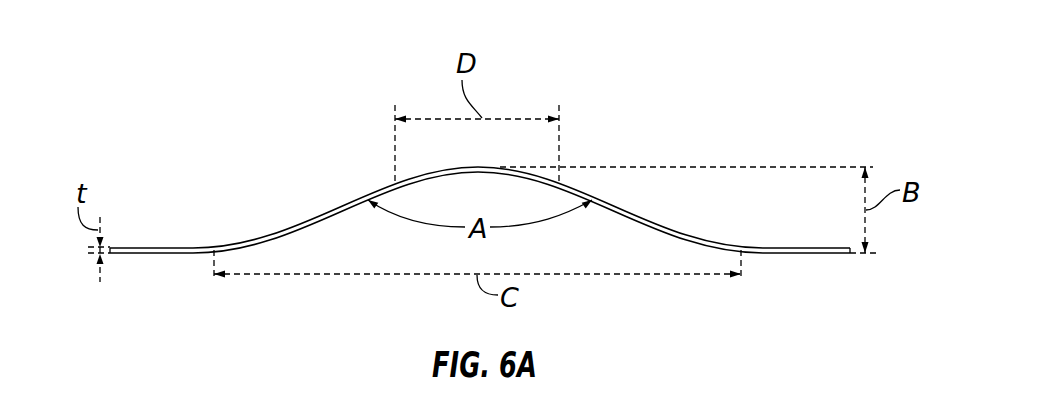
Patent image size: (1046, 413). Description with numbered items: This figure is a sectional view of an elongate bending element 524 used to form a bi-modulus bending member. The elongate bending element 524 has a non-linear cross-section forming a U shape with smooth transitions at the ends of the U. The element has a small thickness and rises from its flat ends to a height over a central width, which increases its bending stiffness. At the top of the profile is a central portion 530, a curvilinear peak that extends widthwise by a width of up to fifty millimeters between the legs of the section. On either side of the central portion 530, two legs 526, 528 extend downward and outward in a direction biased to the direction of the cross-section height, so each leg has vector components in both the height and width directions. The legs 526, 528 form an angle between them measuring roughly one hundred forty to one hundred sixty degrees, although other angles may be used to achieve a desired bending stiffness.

The elongate bending element 524 is at (673, 143).
The leg 526 is at (690, 232).
The leg 528 is at (315, 217).
The central portion 530 is at (474, 167).